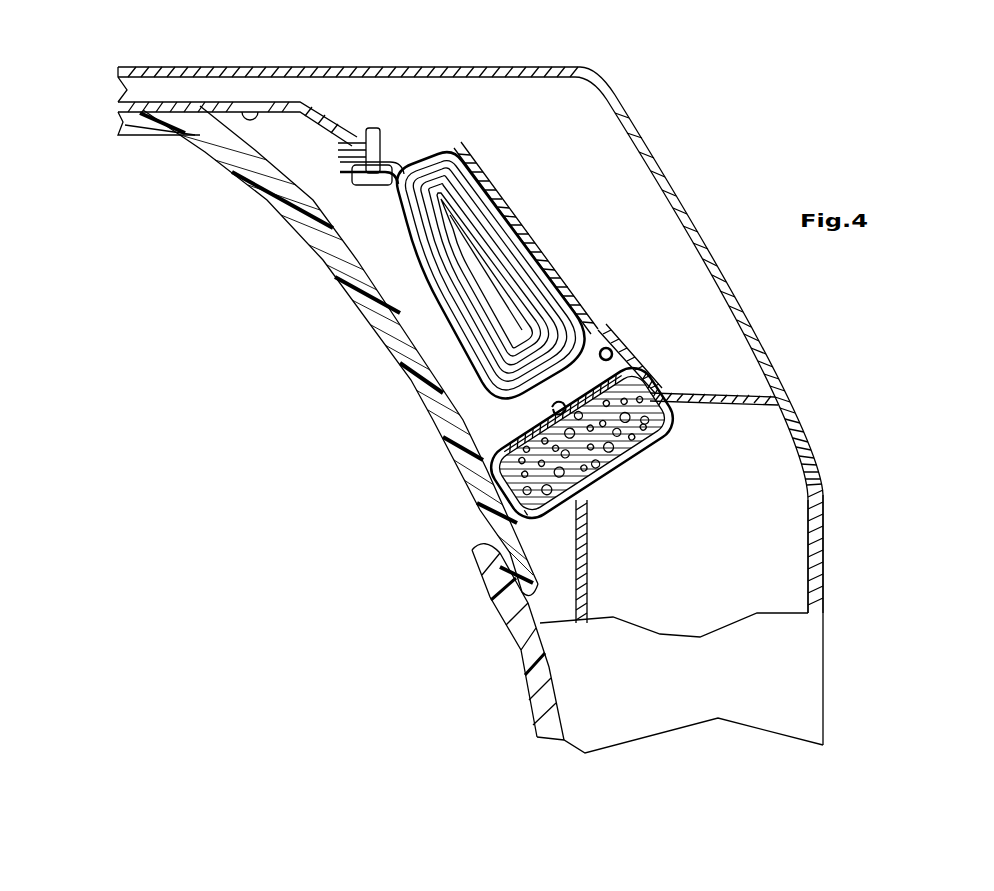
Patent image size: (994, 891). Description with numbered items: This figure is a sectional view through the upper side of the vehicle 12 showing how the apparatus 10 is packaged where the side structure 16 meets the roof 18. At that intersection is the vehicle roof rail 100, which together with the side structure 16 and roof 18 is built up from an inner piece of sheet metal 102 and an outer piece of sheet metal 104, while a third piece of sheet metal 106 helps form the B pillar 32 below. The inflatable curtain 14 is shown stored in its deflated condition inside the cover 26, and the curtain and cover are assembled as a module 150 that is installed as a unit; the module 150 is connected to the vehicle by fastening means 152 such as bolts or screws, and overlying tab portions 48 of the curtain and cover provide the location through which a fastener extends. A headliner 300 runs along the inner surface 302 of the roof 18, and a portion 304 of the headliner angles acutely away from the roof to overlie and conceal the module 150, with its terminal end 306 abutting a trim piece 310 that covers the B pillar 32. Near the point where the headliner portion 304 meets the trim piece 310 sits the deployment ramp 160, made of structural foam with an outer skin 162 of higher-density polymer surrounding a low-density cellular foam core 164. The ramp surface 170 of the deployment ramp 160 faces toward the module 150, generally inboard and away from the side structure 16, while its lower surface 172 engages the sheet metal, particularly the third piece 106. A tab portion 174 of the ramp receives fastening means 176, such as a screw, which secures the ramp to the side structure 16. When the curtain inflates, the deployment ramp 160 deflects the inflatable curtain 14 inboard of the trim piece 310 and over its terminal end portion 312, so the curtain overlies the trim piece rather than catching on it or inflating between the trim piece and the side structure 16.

The apparatus 10 is at (528, 178).
The vehicle 12 is at (725, 165).
The inflatable curtain 14 is at (537, 307).
The side structure 16 is at (850, 538).
The roof 18 is at (92, 70).
The cover 26 is at (437, 283).
The B pillar 32 is at (842, 616).
The tab portions 48 is at (338, 157).
The vehicle roof rail 100 is at (682, 158).
The inner piece of sheet metal 102 is at (808, 530).
The outer piece of sheet metal 104 is at (822, 518).
The third piece of sheet metal 106 is at (588, 571).
The module 150 is at (440, 372).
The fastening means 152 is at (363, 175).
The deployment ramp 160 is at (560, 480).
The outer skin 162 is at (622, 463).
The foam core 164 is at (592, 440).
The ramp surface 170 is at (480, 466).
The lower surface 172 is at (554, 507).
The tab portion 174 is at (640, 350).
The fastening means 176 is at (612, 355).
The headliner 300 is at (152, 122).
The inner surface 302 is at (252, 118).
The portion 304 is at (443, 423).
The terminal end 306 is at (517, 580).
The trim piece 310 is at (508, 606).
The terminal end portion 312 is at (472, 550).